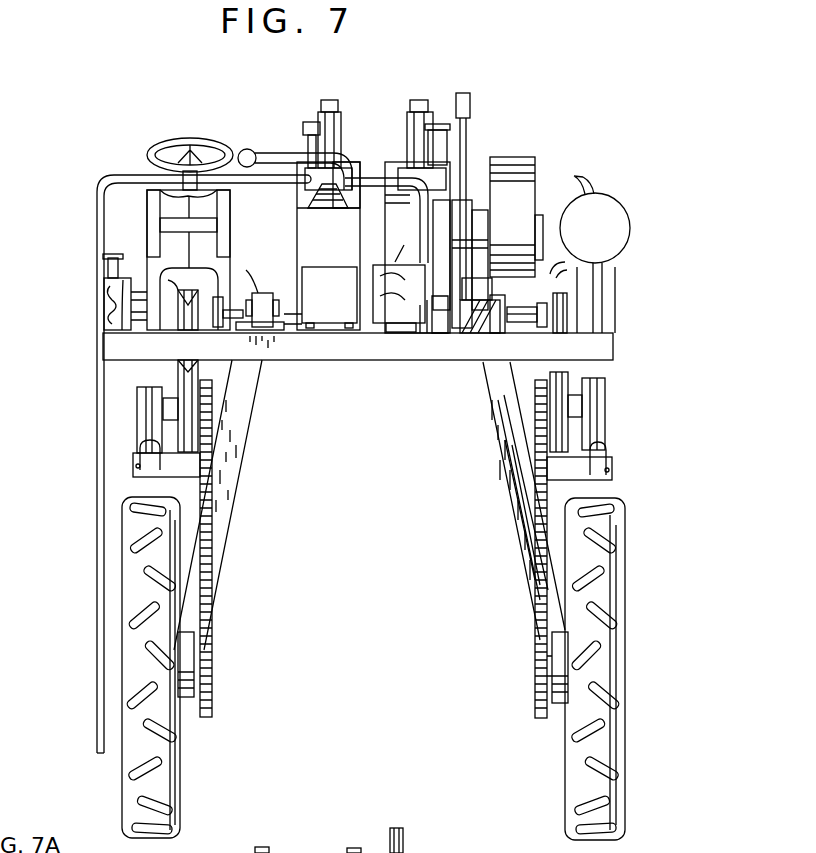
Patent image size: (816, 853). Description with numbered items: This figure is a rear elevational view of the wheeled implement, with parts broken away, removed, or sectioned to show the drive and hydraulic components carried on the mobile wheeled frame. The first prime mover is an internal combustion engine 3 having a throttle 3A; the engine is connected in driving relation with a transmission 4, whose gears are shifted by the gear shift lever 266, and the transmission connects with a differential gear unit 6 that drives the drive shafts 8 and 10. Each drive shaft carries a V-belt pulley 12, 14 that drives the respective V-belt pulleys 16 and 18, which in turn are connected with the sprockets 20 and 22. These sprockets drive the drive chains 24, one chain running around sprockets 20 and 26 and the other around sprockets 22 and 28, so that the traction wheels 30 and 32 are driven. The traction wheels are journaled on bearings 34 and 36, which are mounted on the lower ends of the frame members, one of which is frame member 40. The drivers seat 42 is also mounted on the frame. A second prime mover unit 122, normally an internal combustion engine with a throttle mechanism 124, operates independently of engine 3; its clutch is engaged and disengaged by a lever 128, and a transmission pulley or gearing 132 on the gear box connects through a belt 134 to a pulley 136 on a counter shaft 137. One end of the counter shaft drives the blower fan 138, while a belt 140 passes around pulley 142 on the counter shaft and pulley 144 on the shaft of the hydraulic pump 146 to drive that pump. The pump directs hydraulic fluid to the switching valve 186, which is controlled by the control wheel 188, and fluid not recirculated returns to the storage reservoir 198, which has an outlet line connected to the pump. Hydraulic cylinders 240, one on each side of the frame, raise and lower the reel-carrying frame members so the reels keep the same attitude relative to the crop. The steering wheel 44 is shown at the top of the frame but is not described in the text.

The internal combustion engine 3 is at (350, 168).
The throttle 3A is at (308, 124).
The transmission 4 is at (297, 246).
The differential gear unit 6 is at (310, 286).
The drive shaft 8 is at (248, 300).
The drive shaft 10 is at (515, 323).
The V-belt pulley 12 is at (186, 300).
The V-belt pulley 14 is at (557, 301).
The V-belt pulley 16 is at (178, 378).
The V-belt pulley 18 is at (570, 376).
The sprocket 20 is at (208, 383).
The sprocket 22 is at (527, 390).
The drive chain 24 is at (537, 562).
The sprocket 26 is at (212, 675).
The sprocket 28 is at (537, 664).
The traction wheel 30 is at (175, 782).
The traction wheel 32 is at (612, 710).
The bearing 34 is at (186, 700).
The bearing 36 is at (557, 705).
The frame member 40 is at (520, 476).
The drivers seat 42 is at (147, 238).
The steering wheel 44 is at (158, 148).
The second prime mover unit 122 is at (436, 840).
The throttle mechanism 124 is at (438, 128).
The lever 128 is at (470, 105).
The transmission pulley or gearing 132 is at (480, 303).
The belt 134 is at (473, 200).
The pulley 136 is at (483, 212).
The counter shaft 137 is at (410, 224).
The blower fan 138 is at (525, 165).
The belt 140 is at (445, 320).
The pulley 142 is at (420, 236).
The pulley 144 is at (428, 308).
The hydraulic pump 146 is at (383, 327).
The switching valve 186 is at (128, 280).
The control wheel 188 is at (105, 255).
The storage reservoir 198 is at (612, 205).
The hydraulic cylinder 240 is at (140, 424).
The gear shift lever 266 is at (300, 160).